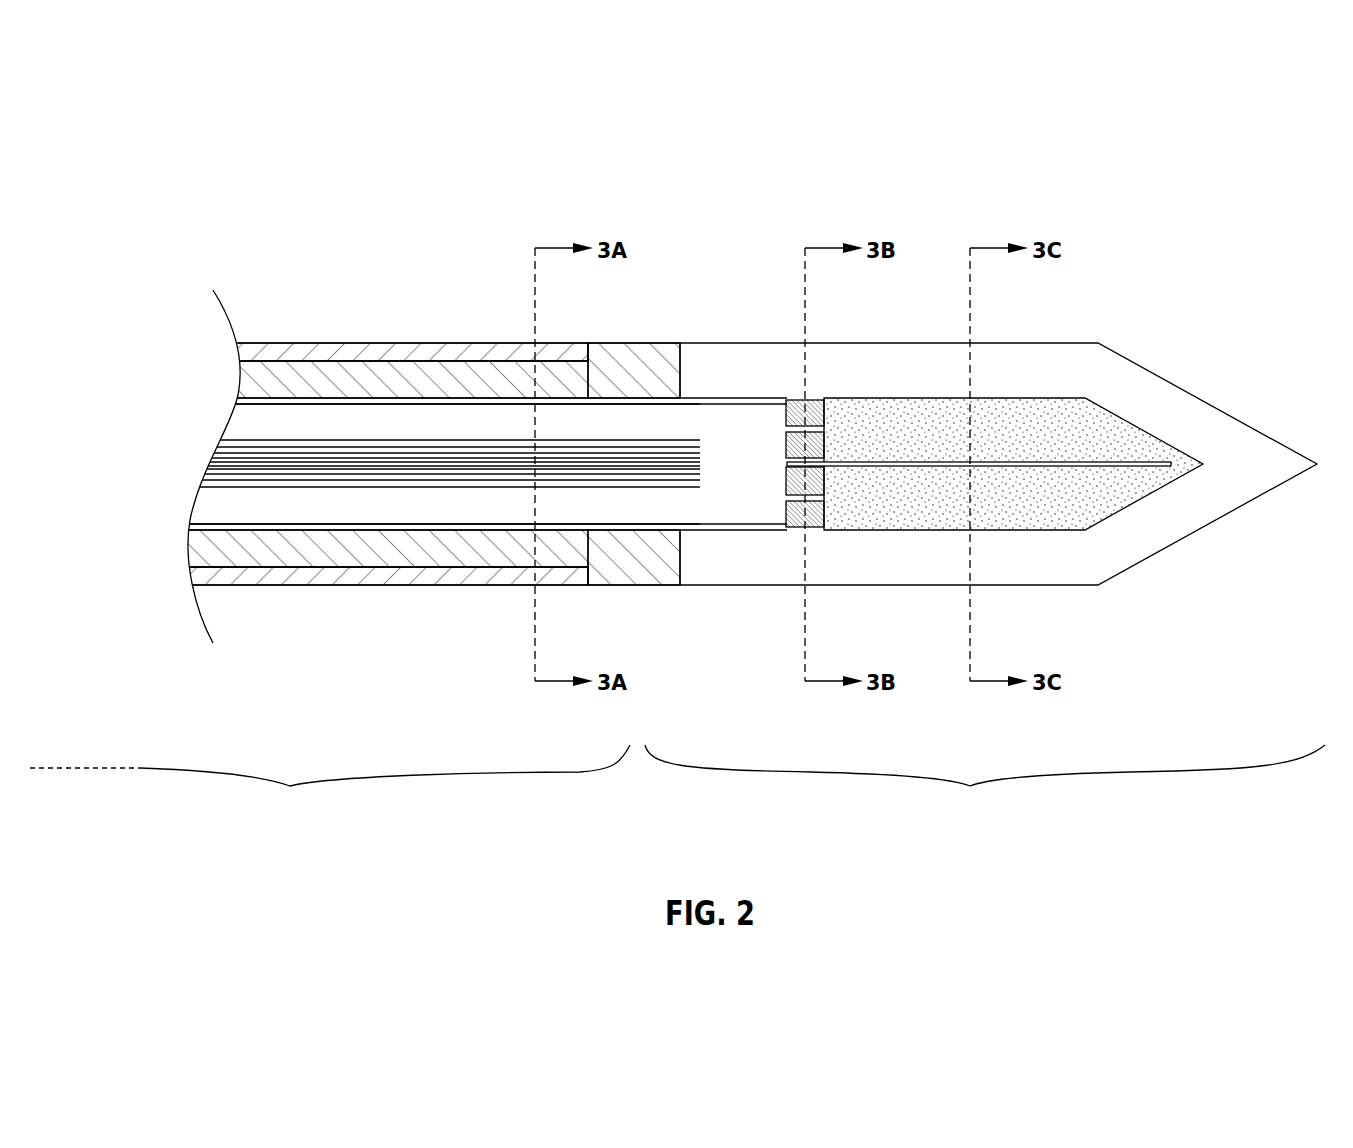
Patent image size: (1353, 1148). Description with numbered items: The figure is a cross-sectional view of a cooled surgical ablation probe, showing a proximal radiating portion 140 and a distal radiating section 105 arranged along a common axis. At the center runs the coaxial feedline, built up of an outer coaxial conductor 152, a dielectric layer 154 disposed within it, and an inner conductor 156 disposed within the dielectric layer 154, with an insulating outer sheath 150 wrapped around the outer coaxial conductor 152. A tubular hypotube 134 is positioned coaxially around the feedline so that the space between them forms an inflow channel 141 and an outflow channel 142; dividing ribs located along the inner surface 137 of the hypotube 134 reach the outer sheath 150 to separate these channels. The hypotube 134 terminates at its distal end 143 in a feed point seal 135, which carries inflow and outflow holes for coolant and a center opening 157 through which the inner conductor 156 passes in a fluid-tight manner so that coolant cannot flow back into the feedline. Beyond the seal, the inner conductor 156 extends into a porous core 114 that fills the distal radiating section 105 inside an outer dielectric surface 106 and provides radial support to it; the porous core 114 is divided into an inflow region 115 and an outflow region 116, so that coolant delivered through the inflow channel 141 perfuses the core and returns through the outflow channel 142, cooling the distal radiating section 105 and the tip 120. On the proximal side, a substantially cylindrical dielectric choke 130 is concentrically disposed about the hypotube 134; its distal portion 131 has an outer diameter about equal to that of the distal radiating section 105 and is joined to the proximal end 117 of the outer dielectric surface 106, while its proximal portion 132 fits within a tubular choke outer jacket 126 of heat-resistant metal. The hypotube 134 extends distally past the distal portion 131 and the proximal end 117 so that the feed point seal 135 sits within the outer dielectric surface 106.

The distal radiating section 105 is at (985, 785).
The outer dielectric surface 106 is at (1150, 528).
The porous core 114 is at (1085, 399).
The inflow region 115 is at (1070, 443).
The outflow region 116 is at (1027, 497).
The proximal end of outer dielectric surface 117 is at (677, 556).
The tip 120 is at (1223, 518).
The choke outer jacket 126 is at (305, 343).
The dielectric choke 130 is at (620, 343).
The distal portion of dielectric choke 131 is at (622, 577).
The proximal portion of dielectric choke 132 is at (385, 375).
The hypotube 134 is at (457, 402).
The feed point seal 135 is at (815, 452).
The inner surface of hypotube 137 is at (318, 520).
The proximal radiating portion 140 is at (330, 785).
The inflow channel 141 is at (527, 415).
The outflow channel 142 is at (520, 515).
The distal end of hypotube 143 is at (787, 528).
The insulating outer sheath 150 is at (725, 442).
The outer coaxial conductor 152 is at (755, 450).
The dielectric layer 154 is at (780, 459).
The inner conductor 156 is at (982, 466).
The center opening 157 is at (823, 463).